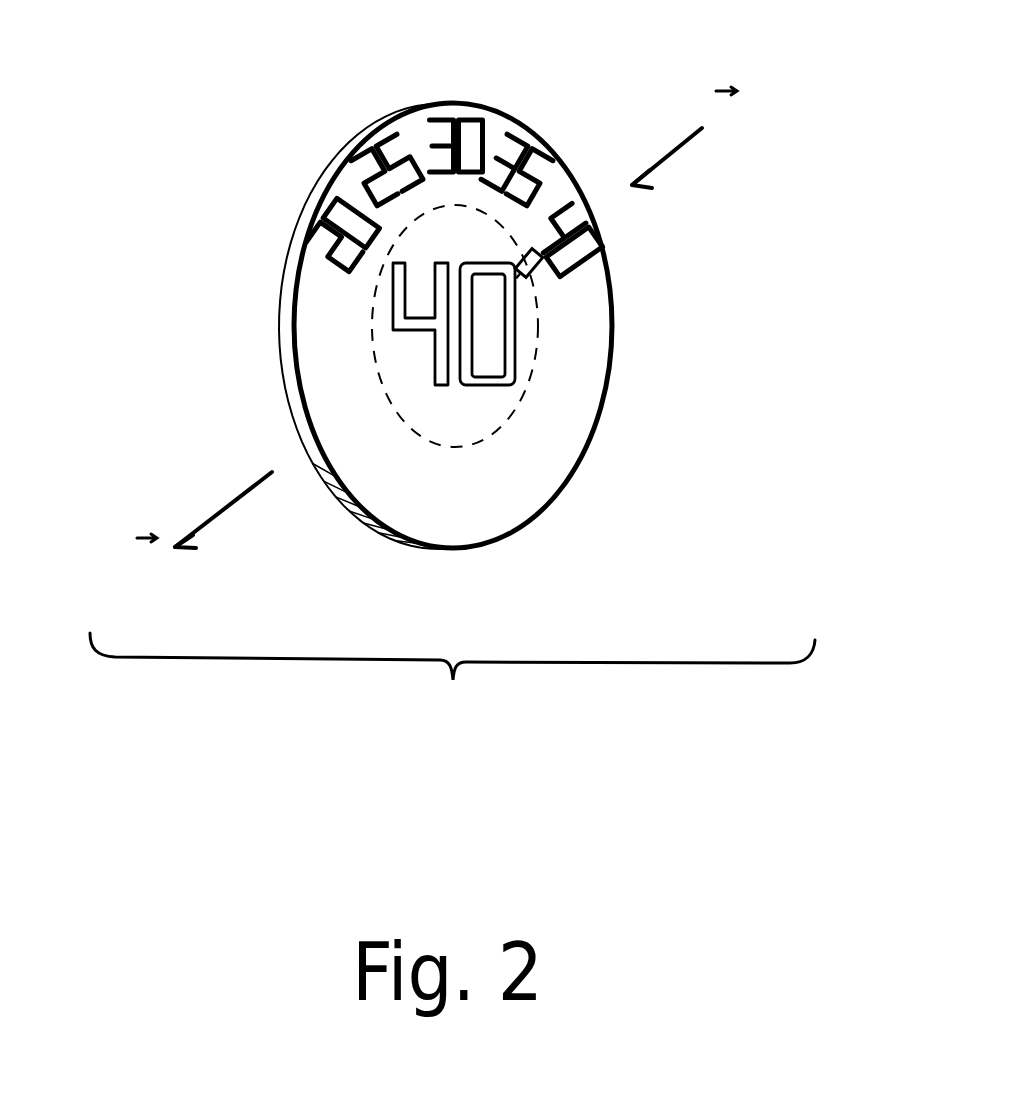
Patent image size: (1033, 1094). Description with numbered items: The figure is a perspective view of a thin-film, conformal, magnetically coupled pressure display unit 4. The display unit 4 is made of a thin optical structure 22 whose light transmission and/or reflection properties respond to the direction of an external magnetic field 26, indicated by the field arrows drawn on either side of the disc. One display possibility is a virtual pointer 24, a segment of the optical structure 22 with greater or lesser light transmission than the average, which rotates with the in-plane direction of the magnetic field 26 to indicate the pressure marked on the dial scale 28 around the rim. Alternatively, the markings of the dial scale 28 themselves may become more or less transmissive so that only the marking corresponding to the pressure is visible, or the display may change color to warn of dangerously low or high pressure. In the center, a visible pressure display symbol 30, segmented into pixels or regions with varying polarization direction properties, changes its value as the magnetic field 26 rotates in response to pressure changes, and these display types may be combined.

The pressure display unit 4 is at (452, 695).
The optical structure 22 is at (298, 208).
The virtual pointer 24 is at (534, 277).
The external magnetic field 26 is at (710, 147).
The dial scale 28 is at (465, 118).
The visible pressure display symbol 30 is at (492, 385).